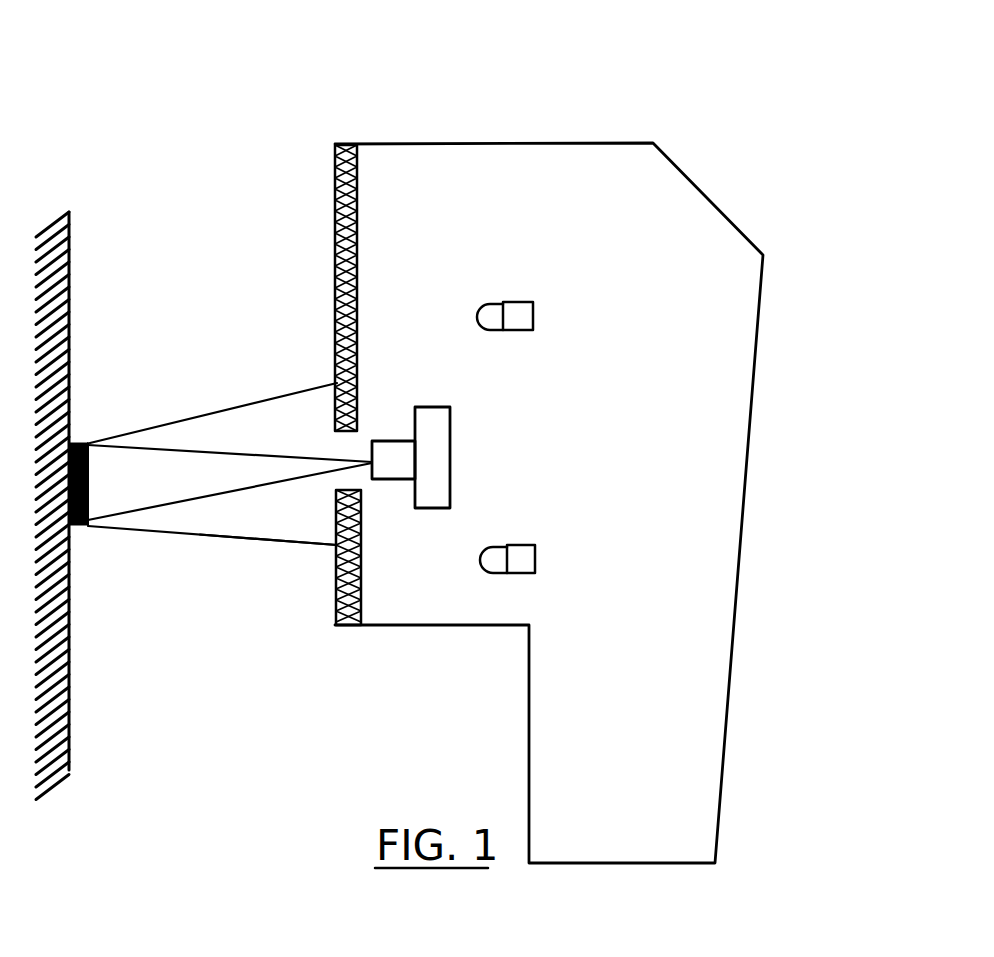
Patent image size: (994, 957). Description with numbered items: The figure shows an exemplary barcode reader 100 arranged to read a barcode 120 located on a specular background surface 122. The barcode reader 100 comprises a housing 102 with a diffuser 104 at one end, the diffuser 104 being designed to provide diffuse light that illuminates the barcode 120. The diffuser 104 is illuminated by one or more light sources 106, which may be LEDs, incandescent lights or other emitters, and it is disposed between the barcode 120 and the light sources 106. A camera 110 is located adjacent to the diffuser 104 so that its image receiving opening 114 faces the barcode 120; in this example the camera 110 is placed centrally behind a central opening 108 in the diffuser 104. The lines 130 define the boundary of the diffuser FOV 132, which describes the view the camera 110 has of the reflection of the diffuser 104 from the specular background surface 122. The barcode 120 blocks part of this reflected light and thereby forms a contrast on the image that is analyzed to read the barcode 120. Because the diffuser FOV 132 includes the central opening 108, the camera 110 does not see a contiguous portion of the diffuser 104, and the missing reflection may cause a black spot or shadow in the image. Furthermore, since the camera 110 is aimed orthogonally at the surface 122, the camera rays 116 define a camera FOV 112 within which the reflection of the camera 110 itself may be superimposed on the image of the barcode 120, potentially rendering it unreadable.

The barcode reader 100 is at (732, 96).
The housing 102 is at (723, 410).
The diffuser 104 is at (333, 255).
The light sources 106 is at (517, 302).
The central opening 108 is at (337, 483).
The camera 110 is at (452, 427).
The camera FOV 112 is at (108, 462).
The image receiving opening 114 is at (372, 441).
The camera rays 116 is at (190, 448).
The barcode 120 is at (90, 505).
The specular background surface 122 is at (69, 297).
The lines 130 is at (308, 385).
The diffuser FOV 132 is at (300, 530).